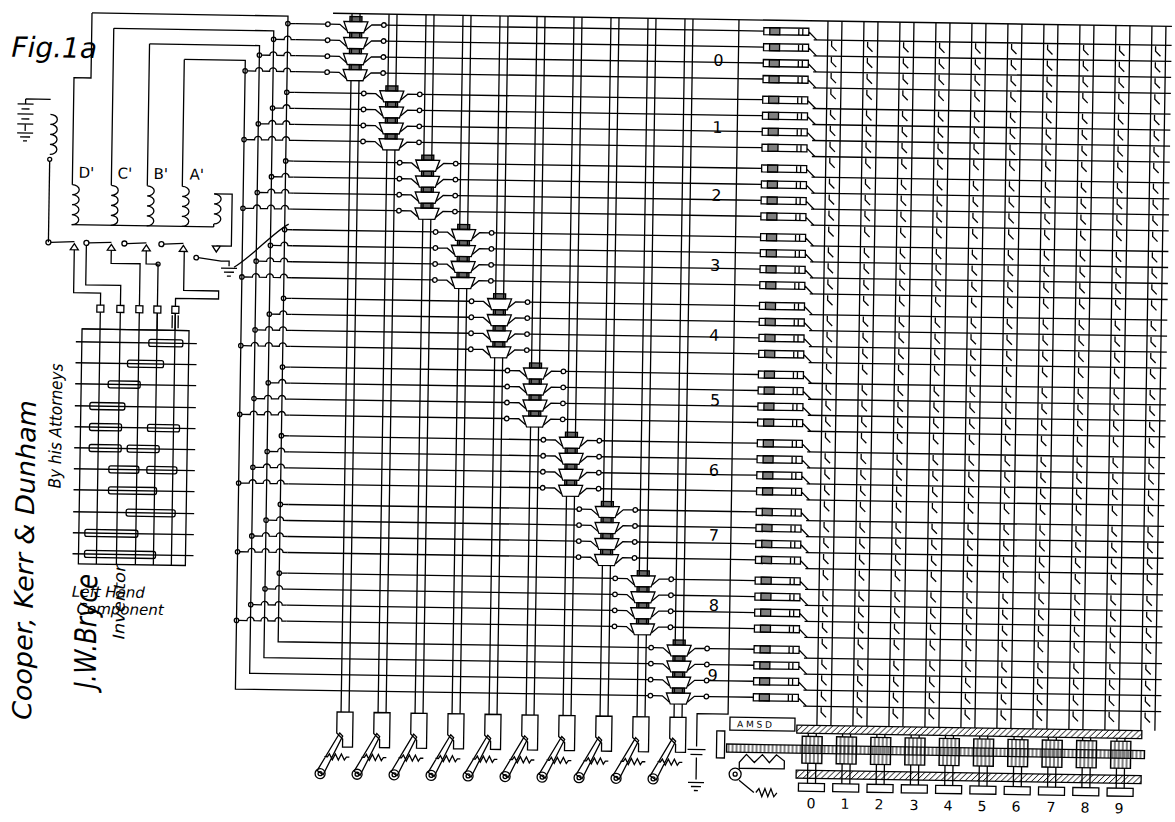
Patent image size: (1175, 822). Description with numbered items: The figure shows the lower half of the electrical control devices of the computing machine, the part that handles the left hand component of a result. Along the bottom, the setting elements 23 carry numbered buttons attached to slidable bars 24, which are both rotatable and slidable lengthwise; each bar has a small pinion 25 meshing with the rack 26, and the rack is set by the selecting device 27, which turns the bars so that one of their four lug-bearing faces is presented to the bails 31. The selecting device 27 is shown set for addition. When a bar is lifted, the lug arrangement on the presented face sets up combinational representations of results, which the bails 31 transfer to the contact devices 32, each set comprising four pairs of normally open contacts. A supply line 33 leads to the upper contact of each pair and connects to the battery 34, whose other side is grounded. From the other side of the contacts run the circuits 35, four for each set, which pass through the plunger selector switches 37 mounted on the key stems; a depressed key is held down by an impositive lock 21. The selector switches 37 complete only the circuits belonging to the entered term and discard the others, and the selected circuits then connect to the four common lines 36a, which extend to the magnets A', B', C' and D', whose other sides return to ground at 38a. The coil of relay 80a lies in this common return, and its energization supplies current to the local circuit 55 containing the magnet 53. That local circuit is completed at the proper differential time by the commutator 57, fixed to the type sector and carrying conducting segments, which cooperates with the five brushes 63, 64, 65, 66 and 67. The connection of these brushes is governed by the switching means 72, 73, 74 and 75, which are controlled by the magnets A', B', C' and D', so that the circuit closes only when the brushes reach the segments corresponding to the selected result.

The impositive lock 21 is at (318, 768).
The setting elements 23 is at (1125, 779).
The slidable bars 24 is at (848, 183).
The pinion 25 is at (1125, 750).
The rack 26 is at (1130, 755).
The selecting device 27 is at (748, 768).
The bails 31 is at (1135, 400).
The contact devices 32 is at (735, 120).
The supply line 33 is at (733, 427).
The battery 34 is at (692, 786).
The circuits 35 is at (582, 196).
The common lines 36a is at (292, 558).
The plunger selector switches 37 is at (340, 84).
The ground connection 38a is at (276, 240).
The magnet 53 is at (46, 160).
The local circuit 55 is at (44, 218).
The commutator 57 is at (80, 380).
The brush 63 is at (95, 318).
The brush 64 is at (81, 338).
The brush 65 is at (156, 312).
The brush 66 is at (180, 316).
The brush 67 is at (178, 328).
The switching means 72 is at (64, 253).
The switching means 73 is at (102, 253).
The switching means 74 is at (132, 250).
The switching means 75 is at (184, 250).
The relay 80a is at (206, 212).